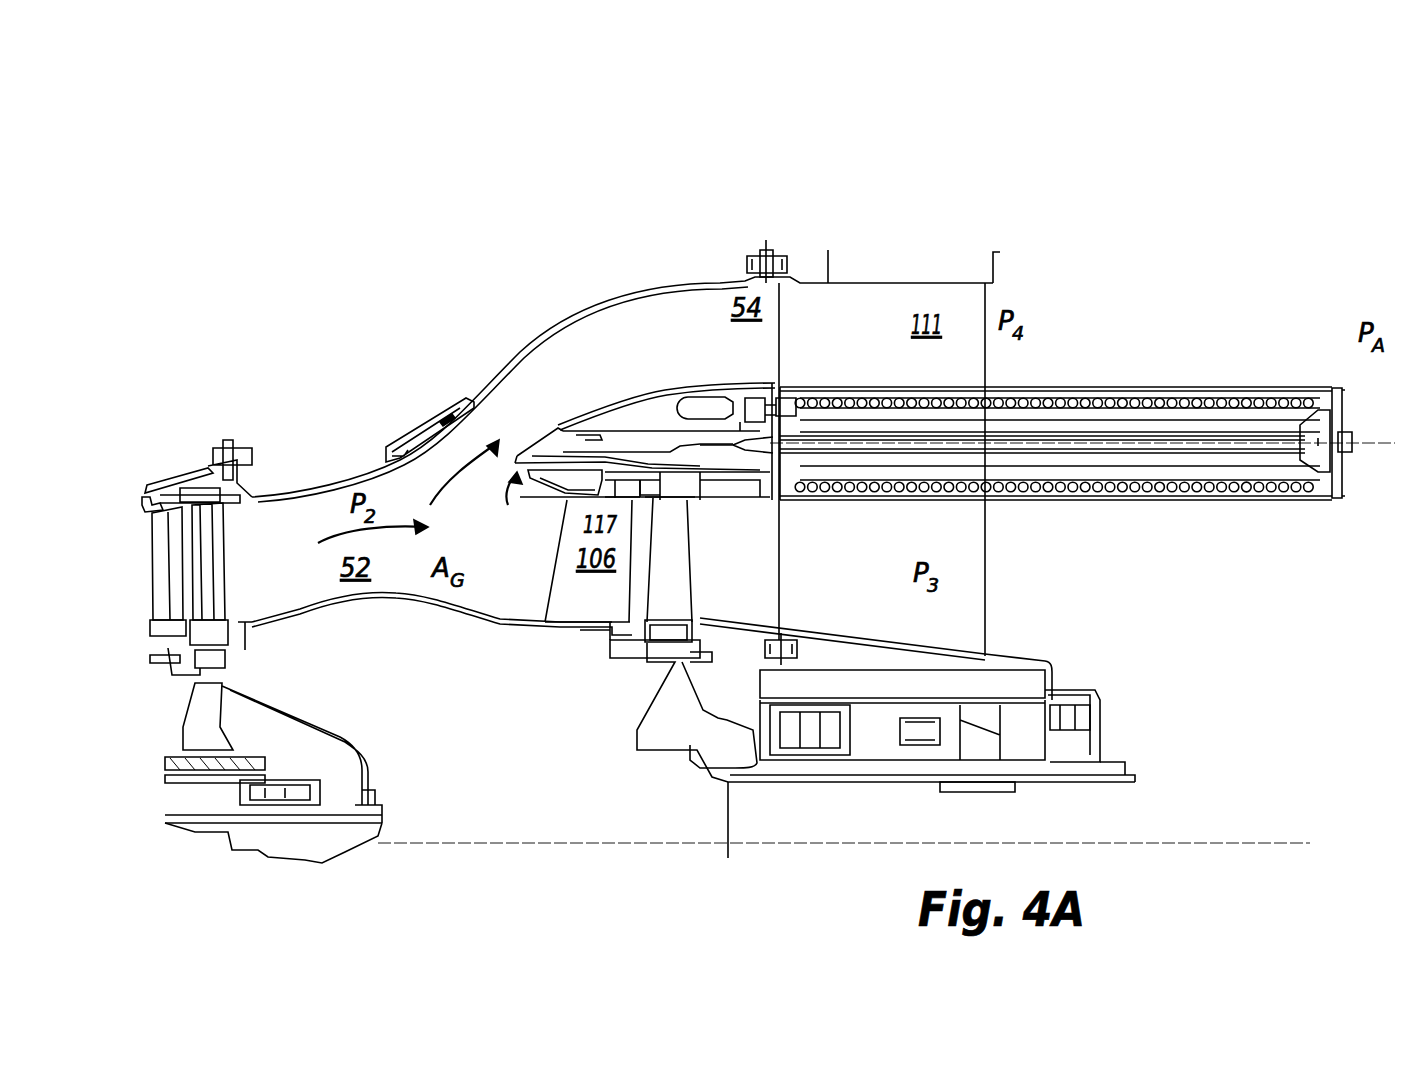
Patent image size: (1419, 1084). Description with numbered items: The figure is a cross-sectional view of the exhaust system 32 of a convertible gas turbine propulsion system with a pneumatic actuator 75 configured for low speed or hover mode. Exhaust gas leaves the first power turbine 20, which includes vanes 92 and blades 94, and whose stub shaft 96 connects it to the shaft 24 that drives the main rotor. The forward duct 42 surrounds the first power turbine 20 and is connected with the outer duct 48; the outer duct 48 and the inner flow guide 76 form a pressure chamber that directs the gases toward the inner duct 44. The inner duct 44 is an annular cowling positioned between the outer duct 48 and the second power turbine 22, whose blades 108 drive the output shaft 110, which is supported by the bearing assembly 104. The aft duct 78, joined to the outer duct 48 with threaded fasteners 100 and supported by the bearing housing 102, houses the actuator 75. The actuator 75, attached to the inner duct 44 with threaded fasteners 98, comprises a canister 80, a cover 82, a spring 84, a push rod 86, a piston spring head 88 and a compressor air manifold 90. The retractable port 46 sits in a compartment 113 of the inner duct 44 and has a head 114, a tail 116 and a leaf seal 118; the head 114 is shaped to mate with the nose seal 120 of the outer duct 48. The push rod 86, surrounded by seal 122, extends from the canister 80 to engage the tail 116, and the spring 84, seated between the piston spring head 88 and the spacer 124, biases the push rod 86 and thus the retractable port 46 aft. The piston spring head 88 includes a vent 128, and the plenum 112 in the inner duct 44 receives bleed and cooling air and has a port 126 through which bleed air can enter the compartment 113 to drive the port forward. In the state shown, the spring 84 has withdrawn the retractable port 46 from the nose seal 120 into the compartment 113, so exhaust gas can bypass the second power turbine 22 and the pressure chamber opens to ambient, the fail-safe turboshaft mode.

The first power turbine 20 is at (142, 537).
The second power turbine 22 is at (594, 667).
The shaft 24 is at (378, 834).
The exhaust system 32 is at (505, 305).
The forward duct 42 is at (205, 472).
The inner duct 44 is at (612, 402).
The retractable port 46 is at (511, 531).
The outer duct 48 is at (643, 292).
The pneumatic actuator 75 is at (1073, 360).
The inner flow guide 76 is at (440, 617).
The aft duct 78 is at (828, 256).
The canister 80 is at (1227, 387).
The cover 82 is at (1340, 420).
The spring 84 is at (1150, 400).
The push rod 86 is at (1220, 442).
The piston spring head 88 is at (1315, 470).
The compressor air manifold 90 is at (656, 408).
The vanes 92 is at (165, 585).
The blades 94 is at (212, 572).
The stub shaft 96 is at (335, 738).
The threaded fasteners 98 is at (778, 408).
The threaded fasteners 100 is at (762, 260).
The bearing housing 102 is at (1012, 660).
The bearing assembly 104 is at (1100, 740).
The blades 108 is at (680, 598).
The output shaft 110 is at (1072, 775).
The plenum 112 is at (654, 410).
The compartment 113 is at (597, 440).
The head 114 is at (553, 440).
The tail 116 is at (745, 458).
The leaf seal 118 is at (700, 482).
The nose seal 120 is at (432, 440).
The seal 122 is at (778, 462).
The spacer 124 is at (800, 412).
The port 126 is at (740, 420).
The vent 128 is at (1310, 422).